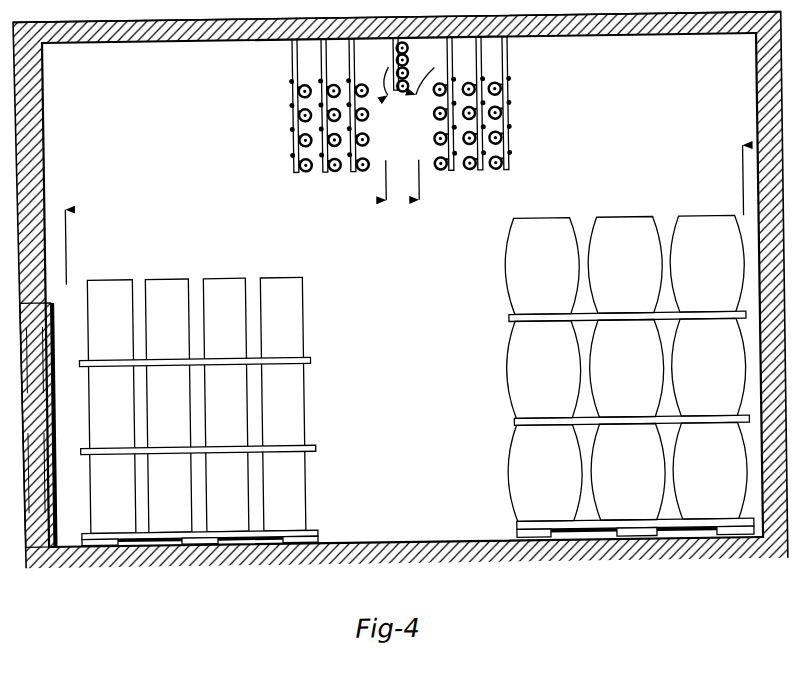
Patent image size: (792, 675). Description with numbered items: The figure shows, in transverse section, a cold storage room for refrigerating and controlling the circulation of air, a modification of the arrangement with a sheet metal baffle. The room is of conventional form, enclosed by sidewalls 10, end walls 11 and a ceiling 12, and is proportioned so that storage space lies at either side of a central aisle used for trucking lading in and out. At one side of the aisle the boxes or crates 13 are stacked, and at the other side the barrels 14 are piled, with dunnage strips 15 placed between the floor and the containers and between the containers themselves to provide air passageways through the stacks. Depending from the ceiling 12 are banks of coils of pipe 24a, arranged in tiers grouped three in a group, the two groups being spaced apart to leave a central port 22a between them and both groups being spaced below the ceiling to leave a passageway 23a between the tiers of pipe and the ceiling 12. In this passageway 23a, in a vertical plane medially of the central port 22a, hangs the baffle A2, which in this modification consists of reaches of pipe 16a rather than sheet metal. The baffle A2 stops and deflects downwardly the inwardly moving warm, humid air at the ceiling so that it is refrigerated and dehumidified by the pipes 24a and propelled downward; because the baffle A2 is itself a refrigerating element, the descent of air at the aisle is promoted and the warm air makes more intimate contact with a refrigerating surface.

The sidewall 10 is at (35, 161).
The end wall 11 is at (385, 535).
The ceiling 12 is at (162, 37).
The boxes or crates 13 is at (165, 281).
The barrels 14 is at (635, 223).
The dunnage strips 15 is at (306, 361).
The reaches of pipe 16a is at (399, 96).
The central port 22a is at (394, 152).
The passageway 23a is at (461, 64).
The banks of coils of pipe 24a is at (296, 103).
The baffle A2 is at (408, 66).